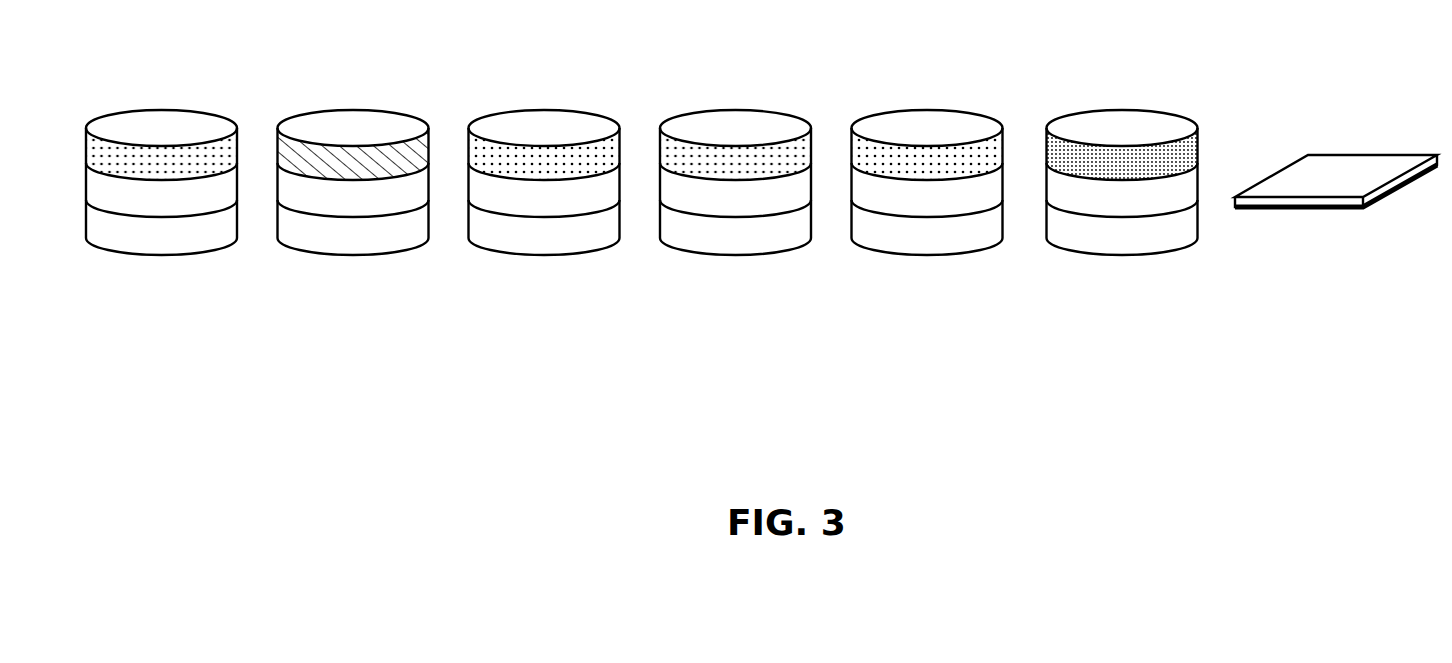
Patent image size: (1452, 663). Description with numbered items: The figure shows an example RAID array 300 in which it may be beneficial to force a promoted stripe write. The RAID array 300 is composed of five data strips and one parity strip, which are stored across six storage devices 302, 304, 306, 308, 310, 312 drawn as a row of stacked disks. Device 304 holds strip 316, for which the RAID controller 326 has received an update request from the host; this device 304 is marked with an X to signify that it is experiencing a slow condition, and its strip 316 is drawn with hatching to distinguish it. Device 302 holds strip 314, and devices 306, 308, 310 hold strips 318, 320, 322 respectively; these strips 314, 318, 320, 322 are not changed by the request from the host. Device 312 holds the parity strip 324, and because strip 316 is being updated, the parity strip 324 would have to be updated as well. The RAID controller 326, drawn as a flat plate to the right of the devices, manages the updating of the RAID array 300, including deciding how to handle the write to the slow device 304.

The RAID array 300 is at (447, 293).
The device 302 is at (222, 130).
The device 304 is at (415, 128).
The device 306 is at (595, 128).
The device 308 is at (788, 128).
The device 310 is at (987, 128).
The device 312 is at (1182, 128).
The strip 314 is at (117, 167).
The strip 316 is at (315, 165).
The strip 318 is at (560, 167).
The strip 320 is at (710, 167).
The strip 322 is at (965, 165).
The parity strip 324 is at (1093, 157).
The RAID controller 326 is at (1317, 178).